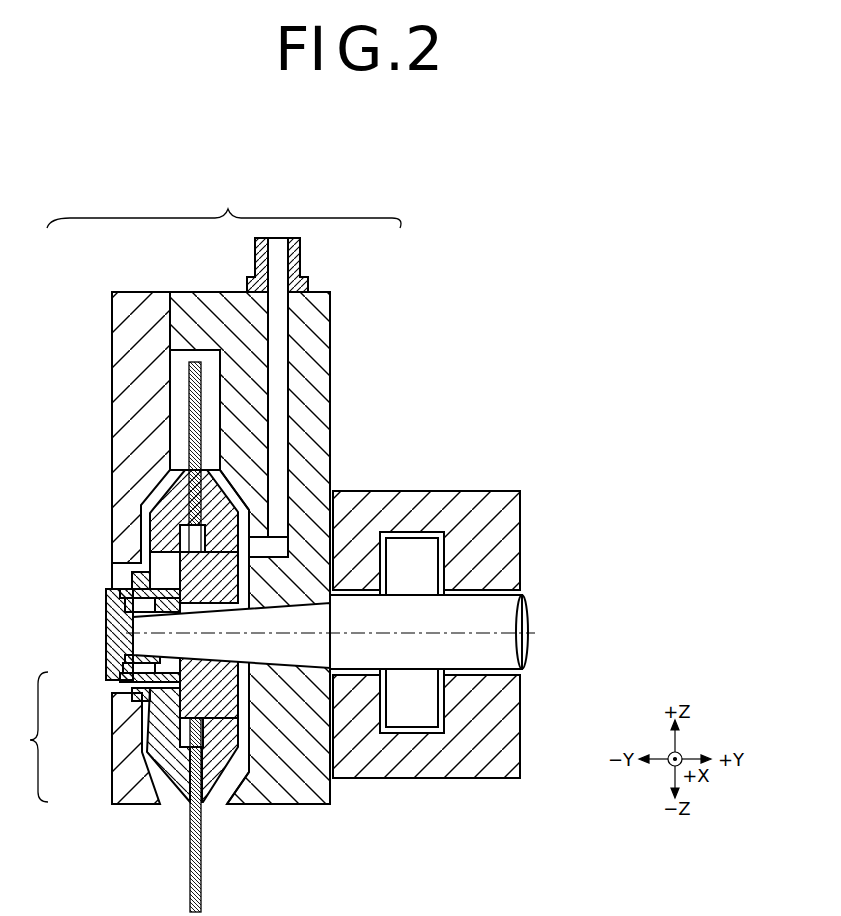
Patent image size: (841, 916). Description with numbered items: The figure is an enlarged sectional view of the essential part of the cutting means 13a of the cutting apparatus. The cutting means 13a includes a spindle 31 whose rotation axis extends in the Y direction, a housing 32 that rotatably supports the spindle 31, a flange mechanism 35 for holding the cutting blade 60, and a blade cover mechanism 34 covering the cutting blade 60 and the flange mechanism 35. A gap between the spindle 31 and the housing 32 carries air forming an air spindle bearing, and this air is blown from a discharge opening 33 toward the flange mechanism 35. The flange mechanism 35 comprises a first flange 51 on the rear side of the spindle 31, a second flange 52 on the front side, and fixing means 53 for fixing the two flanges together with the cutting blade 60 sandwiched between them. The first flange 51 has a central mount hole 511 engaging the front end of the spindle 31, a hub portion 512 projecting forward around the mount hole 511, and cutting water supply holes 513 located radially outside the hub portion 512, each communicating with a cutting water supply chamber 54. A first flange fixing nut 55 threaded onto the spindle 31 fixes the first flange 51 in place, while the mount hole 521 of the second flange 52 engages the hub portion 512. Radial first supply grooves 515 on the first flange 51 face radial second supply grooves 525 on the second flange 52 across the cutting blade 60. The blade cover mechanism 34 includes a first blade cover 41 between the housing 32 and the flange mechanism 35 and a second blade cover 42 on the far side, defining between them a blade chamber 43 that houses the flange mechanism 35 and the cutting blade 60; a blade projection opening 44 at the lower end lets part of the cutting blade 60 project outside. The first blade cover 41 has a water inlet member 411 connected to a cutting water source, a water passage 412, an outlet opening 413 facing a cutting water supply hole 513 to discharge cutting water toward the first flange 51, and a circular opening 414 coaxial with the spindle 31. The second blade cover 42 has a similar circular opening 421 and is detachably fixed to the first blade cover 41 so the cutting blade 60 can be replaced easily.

The cutting means 13a is at (498, 286).
The spindle 31 is at (508, 646).
The housing 32 is at (510, 522).
The discharge opening 33 is at (336, 640).
The blade cover mechanism 34 is at (211, 210).
The flange mechanism 35 is at (1, 753).
The first blade cover 41 is at (330, 342).
The second blade cover 42 is at (130, 322).
The blade chamber 43 is at (176, 428).
The blade projection opening 44 is at (166, 810).
The first flange 51 is at (110, 682).
The second flange 52 is at (165, 768).
The fixing means 53 is at (140, 700).
The cutting water supply chamber 54 is at (188, 532).
The first flange fixing nut 55 is at (128, 662).
The cutting blade 60 is at (202, 890).
The water inlet member 411 is at (300, 256).
The water passage 412 is at (284, 406).
The outlet opening 413 is at (280, 547).
The circular opening 414 is at (291, 690).
The circular opening 421 is at (118, 576).
The mount hole 511 is at (106, 632).
The hub portion 512 is at (121, 596).
The cutting water supply hole 513 is at (242, 560).
The first supply groove 515 is at (246, 472).
The mount hole 521 is at (166, 560).
The second supply groove 525 is at (184, 496).